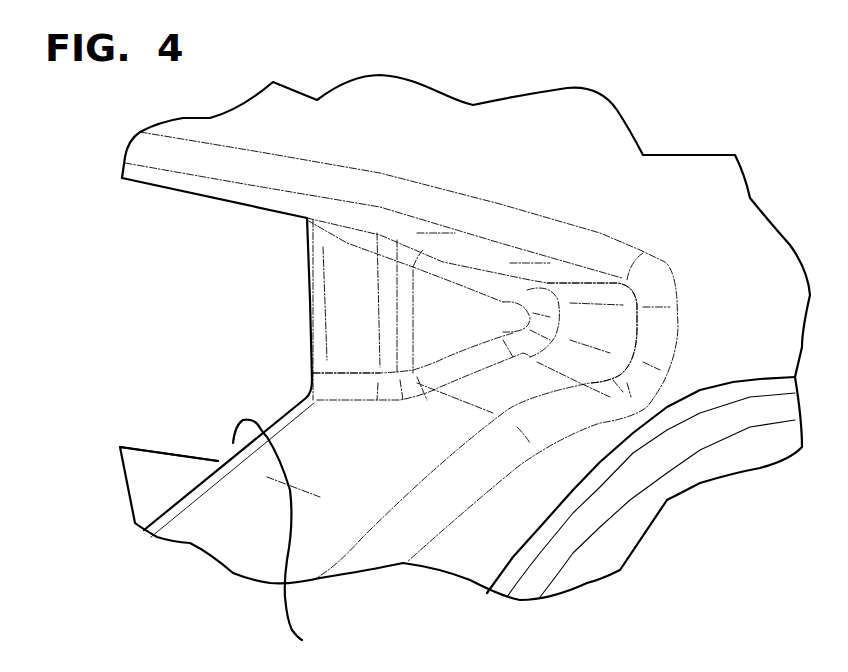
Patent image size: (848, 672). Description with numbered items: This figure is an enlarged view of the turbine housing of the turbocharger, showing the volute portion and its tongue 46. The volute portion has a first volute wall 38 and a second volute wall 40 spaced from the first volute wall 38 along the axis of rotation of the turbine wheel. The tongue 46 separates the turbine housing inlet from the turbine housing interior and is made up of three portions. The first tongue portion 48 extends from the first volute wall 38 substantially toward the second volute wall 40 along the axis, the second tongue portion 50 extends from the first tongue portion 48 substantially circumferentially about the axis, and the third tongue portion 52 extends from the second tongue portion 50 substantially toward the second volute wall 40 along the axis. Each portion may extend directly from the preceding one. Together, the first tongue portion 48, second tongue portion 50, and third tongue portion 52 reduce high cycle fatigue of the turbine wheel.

The first volute wall 38 is at (225, 536).
The second volute wall 40 is at (487, 553).
The tongue 46 is at (277, 282).
The first tongue portion 48 is at (343, 340).
The second tongue portion 50 is at (456, 312).
The third tongue portion 52 is at (600, 328).